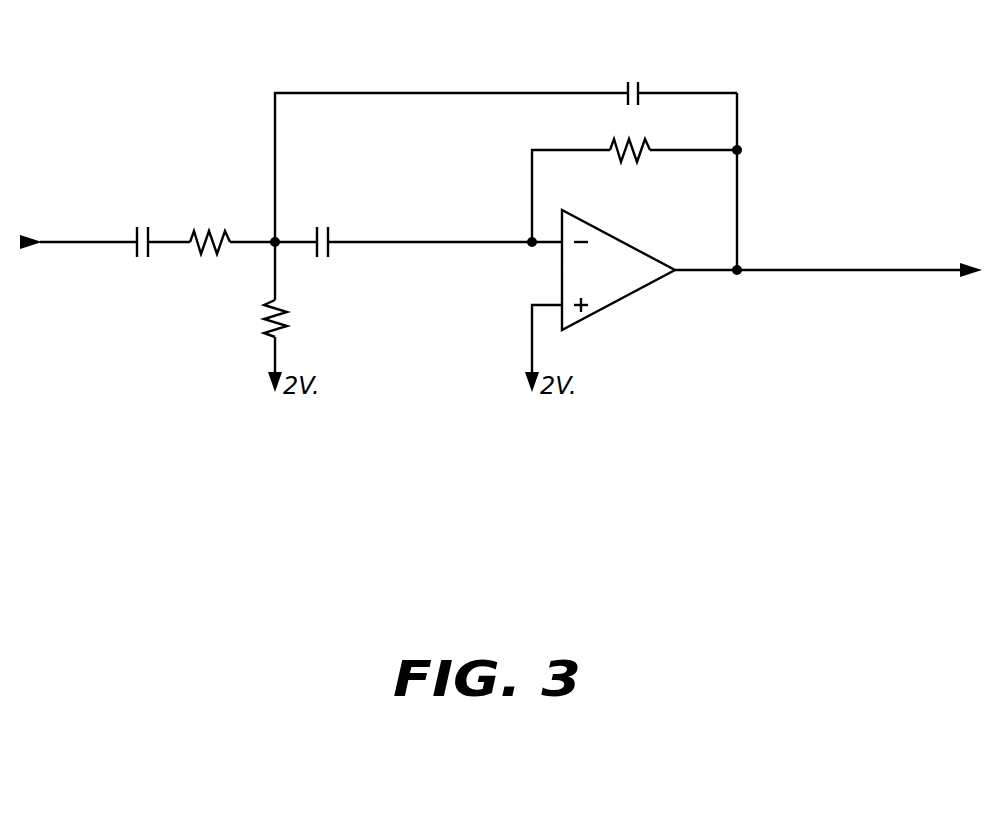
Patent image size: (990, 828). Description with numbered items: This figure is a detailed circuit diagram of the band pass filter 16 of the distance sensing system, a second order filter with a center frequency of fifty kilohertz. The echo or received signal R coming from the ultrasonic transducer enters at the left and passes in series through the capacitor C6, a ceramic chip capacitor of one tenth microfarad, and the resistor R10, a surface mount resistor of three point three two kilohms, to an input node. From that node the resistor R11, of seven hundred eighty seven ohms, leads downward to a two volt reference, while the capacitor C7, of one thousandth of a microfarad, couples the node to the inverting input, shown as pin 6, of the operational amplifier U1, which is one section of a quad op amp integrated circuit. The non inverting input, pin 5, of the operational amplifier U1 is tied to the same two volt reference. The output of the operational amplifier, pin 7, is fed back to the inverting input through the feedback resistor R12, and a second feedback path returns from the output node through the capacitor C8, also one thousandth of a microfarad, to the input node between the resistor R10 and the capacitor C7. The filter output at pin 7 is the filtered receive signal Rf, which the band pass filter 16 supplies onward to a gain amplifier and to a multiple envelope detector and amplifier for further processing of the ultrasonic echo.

The band pass filter 16 is at (838, 106).
The received signal R is at (80, 241).
The filtered receive signal Rf is at (903, 269).
The capacitor C6 is at (137, 229).
The resistor R10 is at (209, 228).
The capacitor C7 is at (322, 229).
The resistor R11 is at (299, 317).
The capacitor C8 is at (506, 149).
The feedback resistor R12 is at (634, 177).
The quad op-amp IC U1 is at (618, 270).
The inverting input pin 6 is at (545, 231).
The non-inverting input pin 5 is at (545, 321).
The output pin 7 is at (687, 258).